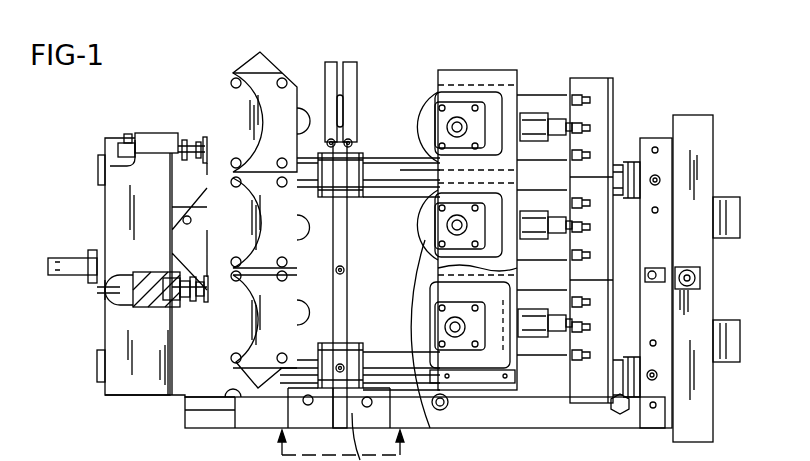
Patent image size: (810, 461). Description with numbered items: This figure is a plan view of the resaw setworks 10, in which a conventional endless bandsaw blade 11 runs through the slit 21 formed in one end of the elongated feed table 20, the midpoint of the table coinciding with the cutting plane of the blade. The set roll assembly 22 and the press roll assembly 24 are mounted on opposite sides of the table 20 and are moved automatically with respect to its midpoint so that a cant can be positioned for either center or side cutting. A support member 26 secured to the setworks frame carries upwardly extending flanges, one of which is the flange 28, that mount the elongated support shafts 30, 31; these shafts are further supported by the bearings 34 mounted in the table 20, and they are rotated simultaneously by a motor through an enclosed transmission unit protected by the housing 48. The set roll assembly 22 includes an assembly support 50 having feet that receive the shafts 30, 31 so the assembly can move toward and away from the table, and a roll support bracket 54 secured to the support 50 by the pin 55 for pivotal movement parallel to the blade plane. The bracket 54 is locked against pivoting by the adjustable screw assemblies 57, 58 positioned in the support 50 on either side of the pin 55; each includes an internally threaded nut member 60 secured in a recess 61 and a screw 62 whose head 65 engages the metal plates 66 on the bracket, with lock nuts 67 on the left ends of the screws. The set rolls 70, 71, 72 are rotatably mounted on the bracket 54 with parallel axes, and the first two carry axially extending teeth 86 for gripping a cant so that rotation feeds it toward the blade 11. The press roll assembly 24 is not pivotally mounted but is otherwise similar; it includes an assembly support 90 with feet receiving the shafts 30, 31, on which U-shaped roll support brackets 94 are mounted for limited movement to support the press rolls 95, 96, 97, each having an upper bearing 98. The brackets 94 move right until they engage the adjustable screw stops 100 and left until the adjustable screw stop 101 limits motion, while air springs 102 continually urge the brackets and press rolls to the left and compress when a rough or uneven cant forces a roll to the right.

The resaw setworks 10 is at (88, 142).
The endless bandsaw blade 11 is at (341, 112).
The feed table 20 is at (347, 283).
The slit 21 is at (335, 100).
The set roll assembly 22 is at (207, 94).
The press roll assembly 24 is at (578, 76).
The support member 26 is at (222, 410).
The flange 28 is at (660, 235).
The support shaft 30 is at (410, 395).
The support shaft 31 is at (383, 160).
The bearings 34 is at (350, 205).
The housing 48 is at (705, 248).
The assembly support 50 is at (110, 390).
The roll support bracket 54 is at (203, 192).
The pin 55 is at (184, 222).
The adjustable screw assembly 57 is at (126, 308).
The adjustable screw assembly 58 is at (147, 132).
The nut member 60 is at (160, 292).
The recess 61 is at (168, 300).
The screw 62 is at (133, 295).
The head 65 is at (207, 233).
The metal plate 66 is at (200, 300).
The lock nut 67 is at (133, 285).
The set roll 70 is at (297, 122).
The set roll 71 is at (297, 228).
The set roll 72 is at (297, 310).
The axially extending teeth 86 is at (305, 320).
The assembly support 90 is at (490, 70).
The U-shaped roll support bracket 94 is at (430, 290).
The press roll 95 is at (438, 128).
The press roll 96 is at (435, 225).
The press roll 97 is at (430, 327).
The upper bearing 98 is at (457, 115).
The adjustable screw stop 100 is at (543, 118).
The adjustable screw stop 101 is at (588, 102).
The air spring 102 is at (560, 117).